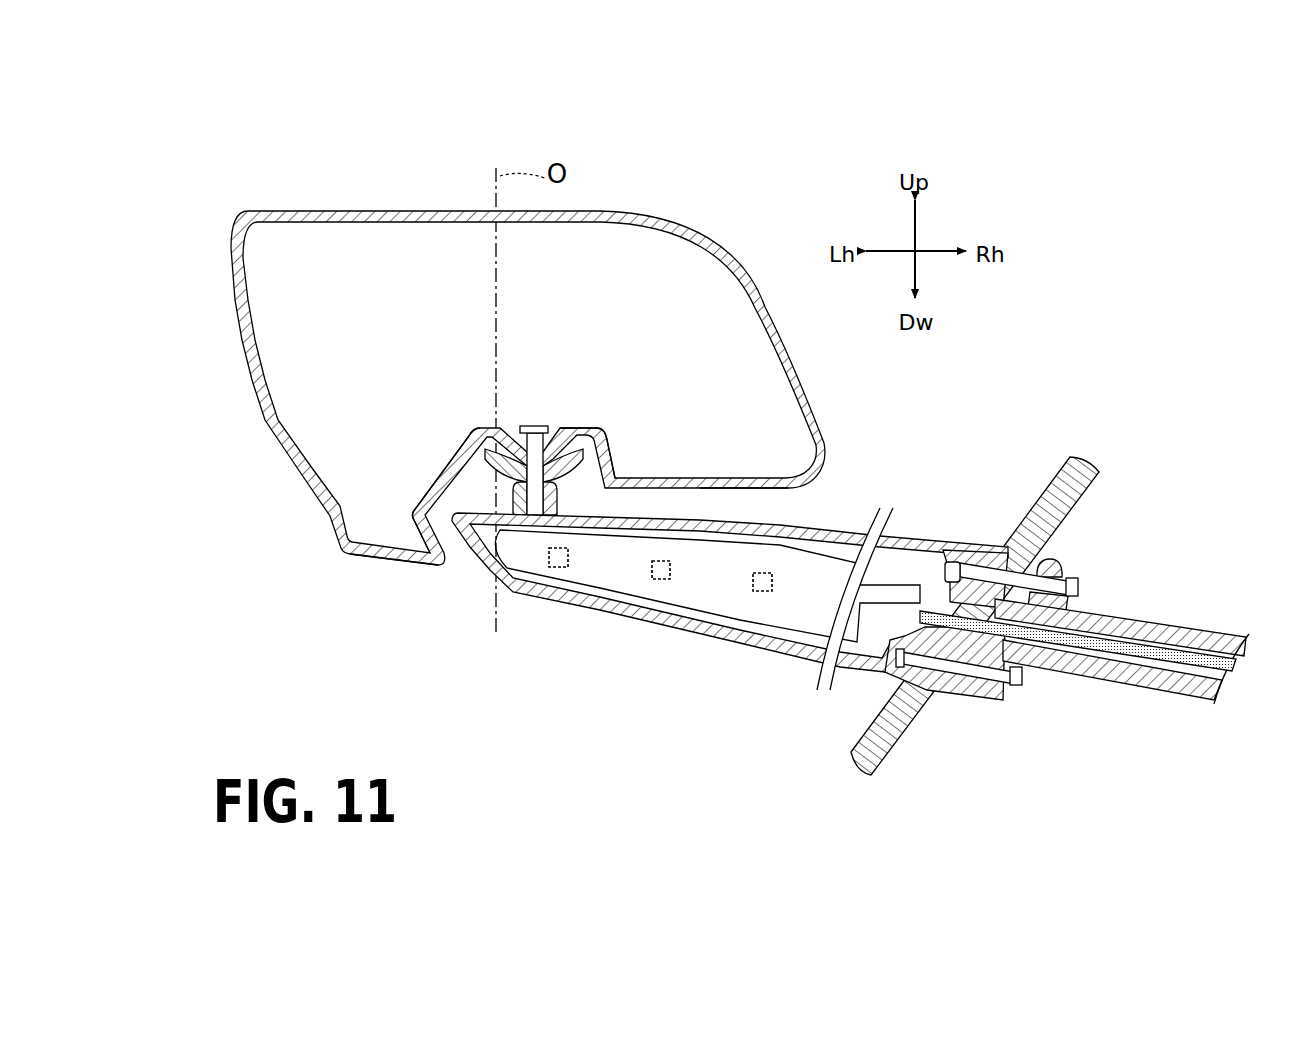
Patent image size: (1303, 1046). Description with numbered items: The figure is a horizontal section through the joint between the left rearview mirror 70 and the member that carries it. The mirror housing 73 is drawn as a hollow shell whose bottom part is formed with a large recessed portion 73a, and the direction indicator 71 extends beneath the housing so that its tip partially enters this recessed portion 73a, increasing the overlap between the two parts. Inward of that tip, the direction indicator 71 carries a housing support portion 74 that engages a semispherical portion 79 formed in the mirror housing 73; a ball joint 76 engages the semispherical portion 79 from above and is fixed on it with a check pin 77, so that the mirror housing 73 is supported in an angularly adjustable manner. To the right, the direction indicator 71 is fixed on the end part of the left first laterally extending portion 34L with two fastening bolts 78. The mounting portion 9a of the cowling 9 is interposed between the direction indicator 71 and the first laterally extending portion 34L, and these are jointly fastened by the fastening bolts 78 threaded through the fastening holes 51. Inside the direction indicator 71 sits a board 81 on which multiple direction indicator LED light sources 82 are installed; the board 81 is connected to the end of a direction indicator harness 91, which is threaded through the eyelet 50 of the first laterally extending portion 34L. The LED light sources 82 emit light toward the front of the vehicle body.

The cowling 9 is at (1092, 484).
The mounting portion 9a is at (1003, 545).
The first laterally extending portion 34L is at (1183, 628).
The eyelet 50 is at (1000, 664).
The fastening holes 51 is at (1055, 558).
The left rearview mirror 70 is at (624, 160).
The direction indicator 71 is at (700, 636).
The mirror housing 73 is at (440, 208).
The recessed portion 73a is at (457, 563).
The housing support portion 74 is at (600, 465).
The ball joint 76 is at (556, 447).
The check pin 77 is at (533, 425).
The fastening bolts 78 is at (1080, 588).
The semispherical portion 79 is at (488, 466).
The board 81 is at (805, 615).
The direction indicator LED light sources 82 is at (557, 568).
The direction indicator harness 91 is at (1130, 686).